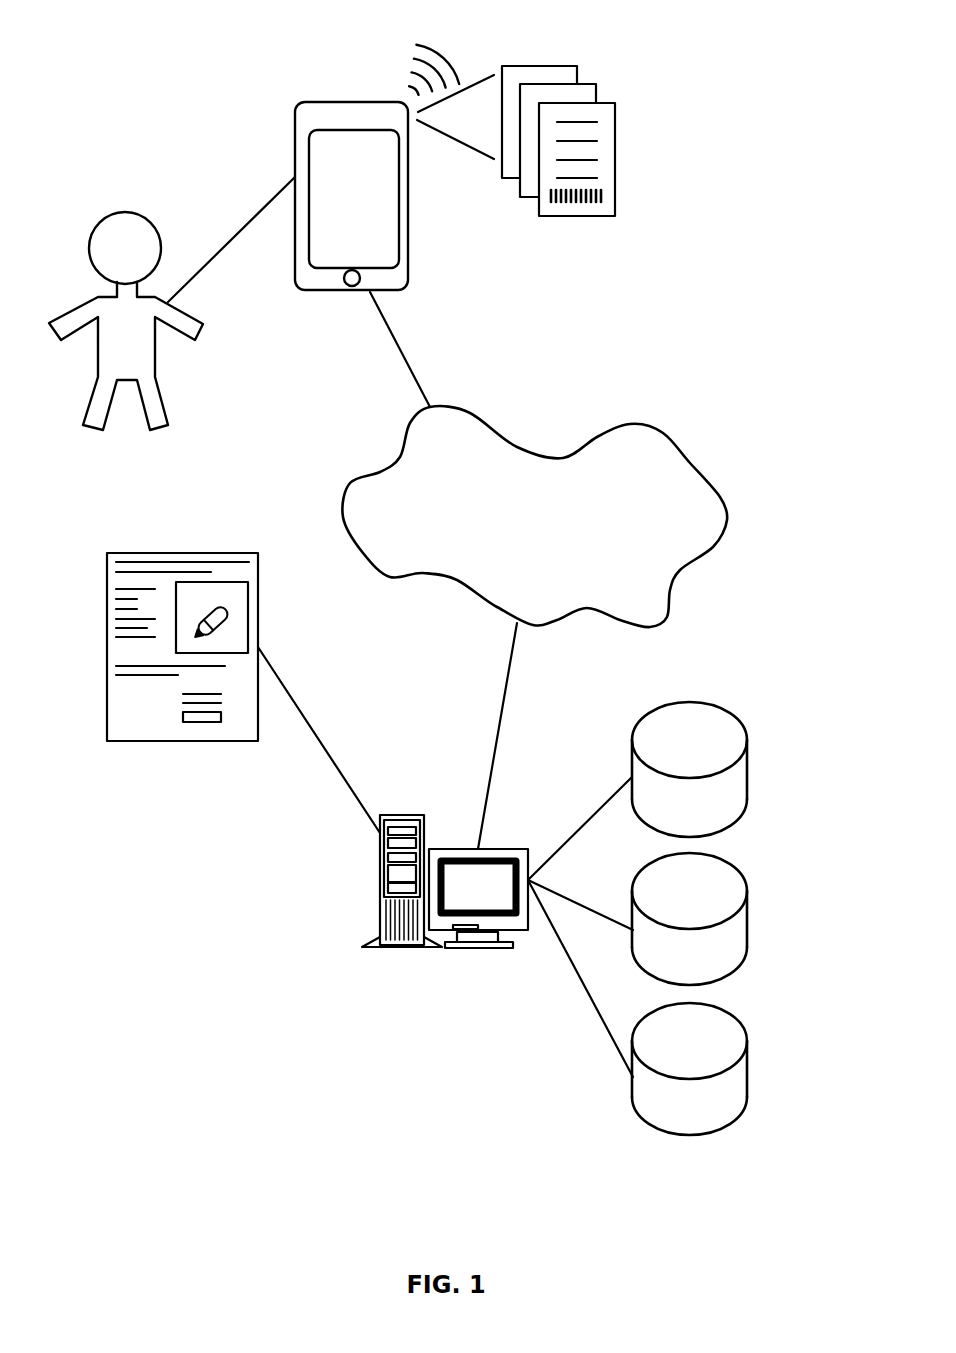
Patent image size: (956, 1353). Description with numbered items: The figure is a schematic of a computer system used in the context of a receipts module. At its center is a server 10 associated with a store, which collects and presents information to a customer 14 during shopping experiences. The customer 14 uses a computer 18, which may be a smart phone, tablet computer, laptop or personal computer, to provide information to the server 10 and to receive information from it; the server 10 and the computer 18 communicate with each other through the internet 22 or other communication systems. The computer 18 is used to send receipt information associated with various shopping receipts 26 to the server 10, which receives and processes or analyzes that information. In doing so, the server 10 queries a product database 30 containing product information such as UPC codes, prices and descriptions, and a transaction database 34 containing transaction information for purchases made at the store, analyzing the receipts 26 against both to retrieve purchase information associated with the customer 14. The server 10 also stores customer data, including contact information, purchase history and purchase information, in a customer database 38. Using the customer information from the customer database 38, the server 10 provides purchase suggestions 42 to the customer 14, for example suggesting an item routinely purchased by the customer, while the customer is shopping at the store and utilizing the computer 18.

The server 10 is at (527, 814).
The customer 14 is at (150, 206).
The computer 18 is at (385, 58).
The internet 22 is at (658, 393).
The shopping receipts 26 is at (583, 39).
The product database 30 is at (751, 696).
The transaction database 34 is at (751, 846).
The customer database 38 is at (751, 996).
The purchase suggestions 42 is at (206, 526).